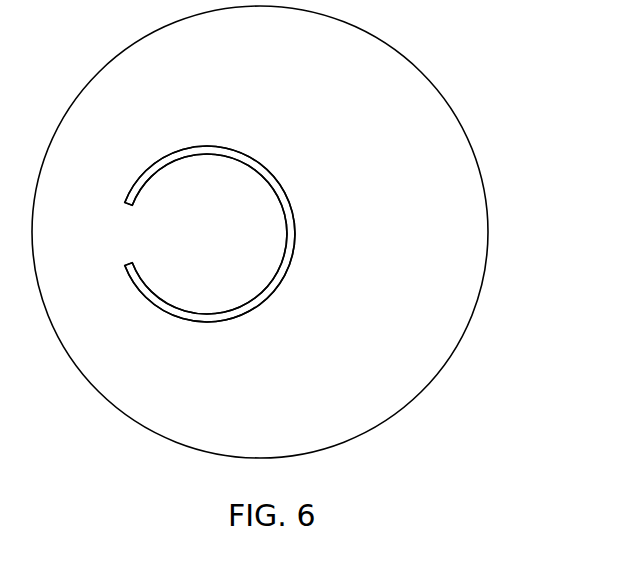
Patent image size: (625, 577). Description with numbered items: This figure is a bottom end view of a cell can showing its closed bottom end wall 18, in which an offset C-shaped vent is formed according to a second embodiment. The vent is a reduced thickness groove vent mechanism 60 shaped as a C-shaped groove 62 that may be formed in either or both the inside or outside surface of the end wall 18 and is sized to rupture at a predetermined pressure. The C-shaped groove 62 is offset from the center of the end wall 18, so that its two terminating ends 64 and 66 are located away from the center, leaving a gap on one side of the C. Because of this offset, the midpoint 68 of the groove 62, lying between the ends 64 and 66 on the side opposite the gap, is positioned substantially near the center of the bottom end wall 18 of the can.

The closed bottom end wall 18 is at (453, 163).
The groove vent mechanism 60 is at (262, 156).
The C-shaped groove 62 is at (195, 155).
The terminating end 64 is at (128, 262).
The terminating end 66 is at (130, 207).
The midpoint 68 is at (295, 225).